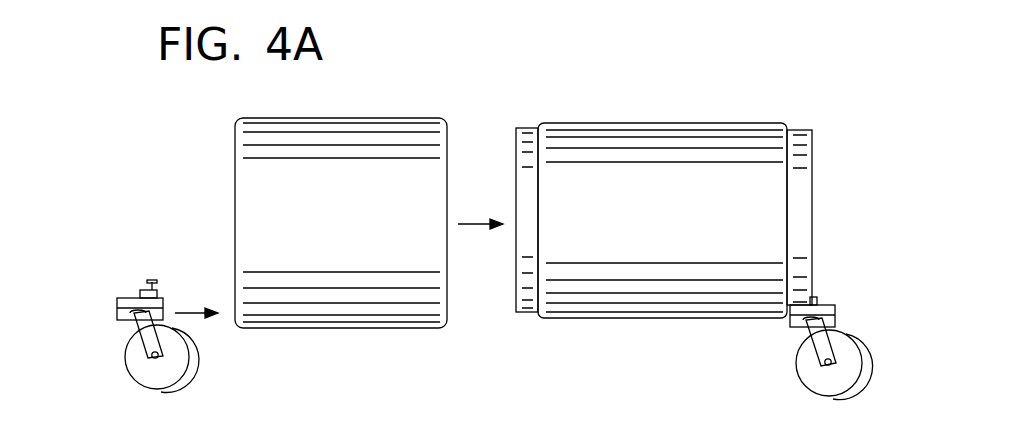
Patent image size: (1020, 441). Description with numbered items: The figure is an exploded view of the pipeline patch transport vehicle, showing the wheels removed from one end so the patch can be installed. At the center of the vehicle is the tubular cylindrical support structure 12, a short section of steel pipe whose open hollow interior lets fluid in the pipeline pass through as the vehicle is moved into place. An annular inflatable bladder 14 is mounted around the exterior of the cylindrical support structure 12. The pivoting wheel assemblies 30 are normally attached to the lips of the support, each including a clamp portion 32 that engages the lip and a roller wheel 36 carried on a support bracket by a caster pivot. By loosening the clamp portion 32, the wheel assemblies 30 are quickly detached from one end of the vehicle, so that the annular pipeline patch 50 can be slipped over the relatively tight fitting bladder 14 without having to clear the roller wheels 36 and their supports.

The cylindrical support structure 12 is at (800, 208).
The inflatable bladder 14 is at (685, 158).
The pivoting wheel assembly 30 is at (130, 300).
The clamp portion 32 is at (140, 290).
The roller wheel 36 is at (130, 358).
The annular pipeline patch 50 is at (358, 233).